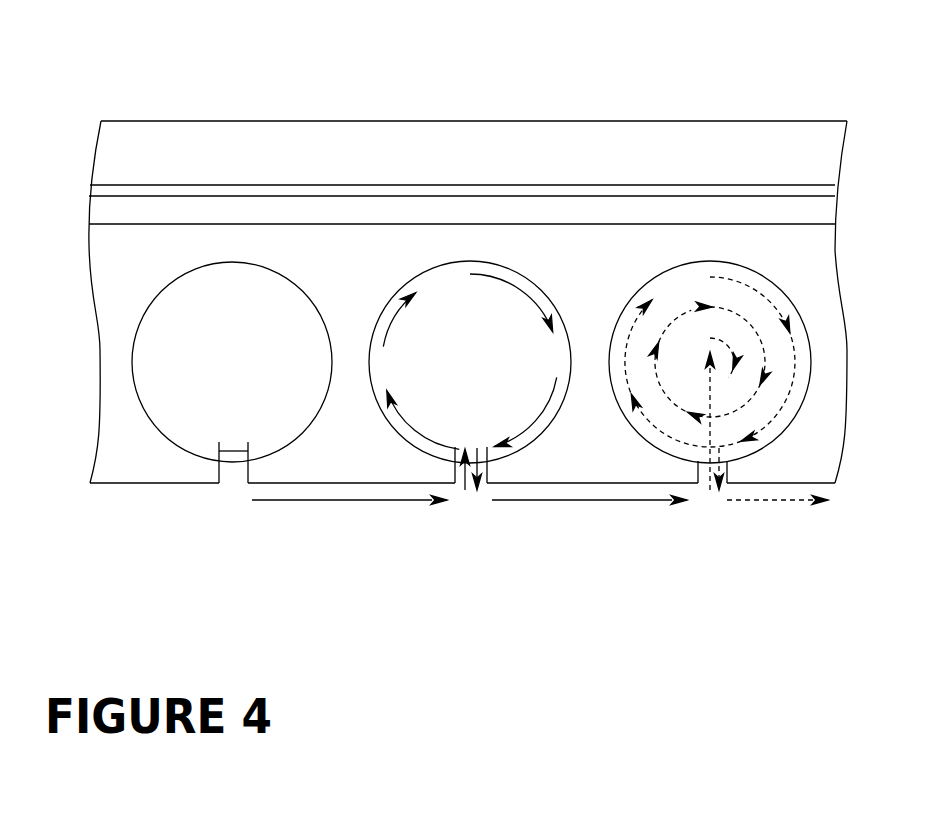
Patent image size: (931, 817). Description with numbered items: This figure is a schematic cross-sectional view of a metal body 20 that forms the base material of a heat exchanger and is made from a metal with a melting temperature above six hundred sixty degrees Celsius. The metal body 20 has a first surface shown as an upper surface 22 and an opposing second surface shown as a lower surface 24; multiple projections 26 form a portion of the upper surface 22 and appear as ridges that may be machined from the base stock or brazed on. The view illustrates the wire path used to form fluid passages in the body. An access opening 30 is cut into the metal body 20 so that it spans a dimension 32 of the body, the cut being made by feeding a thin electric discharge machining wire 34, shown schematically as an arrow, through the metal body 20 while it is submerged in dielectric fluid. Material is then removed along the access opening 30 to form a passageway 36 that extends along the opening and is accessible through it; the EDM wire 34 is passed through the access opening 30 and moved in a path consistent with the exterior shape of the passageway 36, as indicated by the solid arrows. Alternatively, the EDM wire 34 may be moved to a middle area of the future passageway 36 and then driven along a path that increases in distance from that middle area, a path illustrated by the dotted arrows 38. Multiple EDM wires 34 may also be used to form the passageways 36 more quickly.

The metal body 20 is at (165, 98).
The upper surface 22 is at (135, 118).
The lower surface 24 is at (145, 483).
The multiple projections 26 is at (217, 160).
The access opening 30 is at (221, 475).
The dimension 32 is at (232, 450).
The EDM wire 34 is at (354, 502).
The passageway 36 is at (231, 345).
The dotted arrows 38 is at (745, 503).